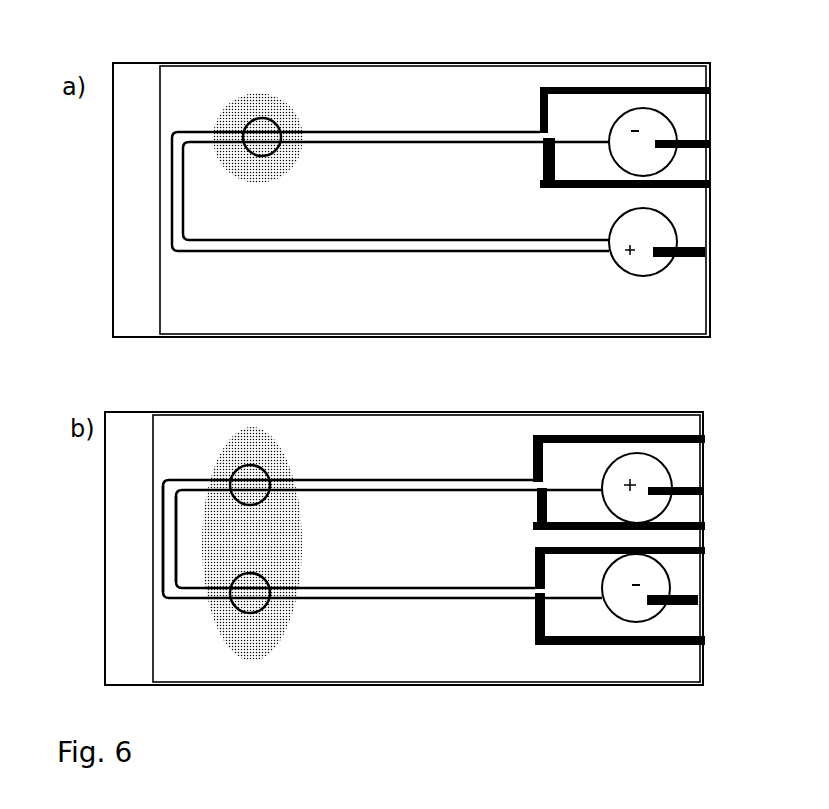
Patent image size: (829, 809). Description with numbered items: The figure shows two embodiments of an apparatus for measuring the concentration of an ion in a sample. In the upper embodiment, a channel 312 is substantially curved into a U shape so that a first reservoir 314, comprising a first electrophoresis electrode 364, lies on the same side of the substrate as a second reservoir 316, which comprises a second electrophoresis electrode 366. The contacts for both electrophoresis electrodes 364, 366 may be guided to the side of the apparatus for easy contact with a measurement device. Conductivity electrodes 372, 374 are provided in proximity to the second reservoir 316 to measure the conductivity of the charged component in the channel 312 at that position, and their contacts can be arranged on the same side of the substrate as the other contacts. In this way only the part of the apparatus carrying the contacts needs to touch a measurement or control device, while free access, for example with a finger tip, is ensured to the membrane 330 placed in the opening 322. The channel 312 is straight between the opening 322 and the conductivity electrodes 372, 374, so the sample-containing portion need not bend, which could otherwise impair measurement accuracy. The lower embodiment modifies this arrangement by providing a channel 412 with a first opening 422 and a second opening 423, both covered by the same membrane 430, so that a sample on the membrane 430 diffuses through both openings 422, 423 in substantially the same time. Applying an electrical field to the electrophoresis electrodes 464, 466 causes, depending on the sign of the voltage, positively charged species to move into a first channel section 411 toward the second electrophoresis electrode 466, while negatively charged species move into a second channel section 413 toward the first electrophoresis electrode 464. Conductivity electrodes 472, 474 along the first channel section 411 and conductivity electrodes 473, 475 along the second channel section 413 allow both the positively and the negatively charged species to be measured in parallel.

The channel 312 is at (383, 127).
The first reservoir 314 is at (643, 235).
The second reservoir 316 is at (652, 117).
The opening 322 is at (263, 128).
The membrane 330 is at (285, 162).
The first electrophoresis electrode 364 is at (690, 258).
The second electrophoresis electrode 366 is at (680, 150).
The conductivity electrode 372 is at (540, 90).
The conductivity electrode 374 is at (543, 155).
The first channel section 411 is at (370, 482).
The channel 412 is at (185, 516).
The second channel section 413 is at (370, 590).
The first opening 422 is at (255, 475).
The second opening 423 is at (250, 602).
The membrane 430 is at (295, 537).
The first electrophoresis electrode 464 is at (687, 607).
The second electrophoresis electrode 466 is at (670, 497).
The conductivity electrode 472 is at (533, 462).
The conductivity electrode 473 is at (533, 572).
The conductivity electrode 474 is at (537, 510).
The conductivity electrode 475 is at (533, 613).